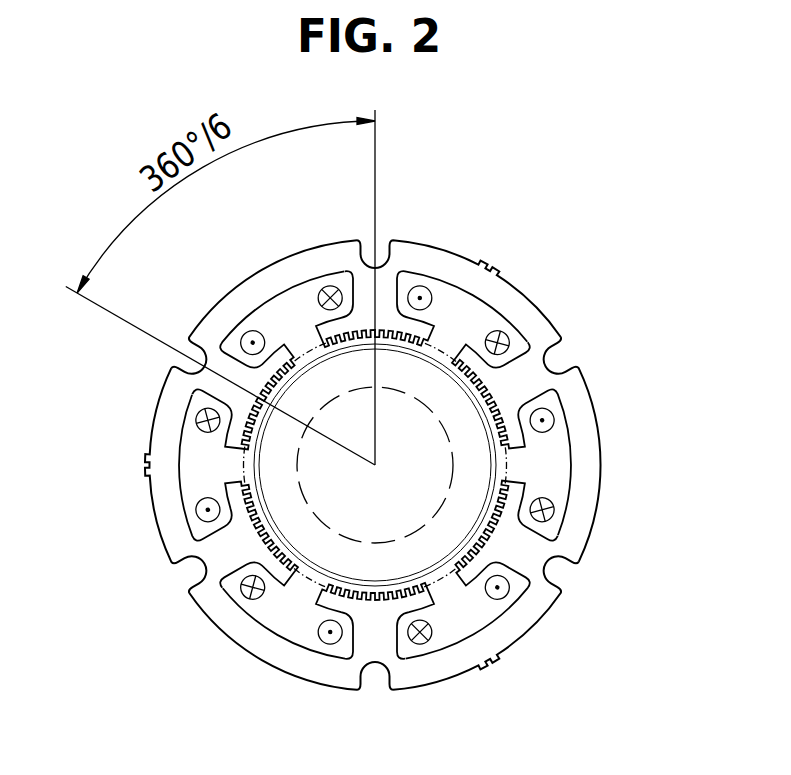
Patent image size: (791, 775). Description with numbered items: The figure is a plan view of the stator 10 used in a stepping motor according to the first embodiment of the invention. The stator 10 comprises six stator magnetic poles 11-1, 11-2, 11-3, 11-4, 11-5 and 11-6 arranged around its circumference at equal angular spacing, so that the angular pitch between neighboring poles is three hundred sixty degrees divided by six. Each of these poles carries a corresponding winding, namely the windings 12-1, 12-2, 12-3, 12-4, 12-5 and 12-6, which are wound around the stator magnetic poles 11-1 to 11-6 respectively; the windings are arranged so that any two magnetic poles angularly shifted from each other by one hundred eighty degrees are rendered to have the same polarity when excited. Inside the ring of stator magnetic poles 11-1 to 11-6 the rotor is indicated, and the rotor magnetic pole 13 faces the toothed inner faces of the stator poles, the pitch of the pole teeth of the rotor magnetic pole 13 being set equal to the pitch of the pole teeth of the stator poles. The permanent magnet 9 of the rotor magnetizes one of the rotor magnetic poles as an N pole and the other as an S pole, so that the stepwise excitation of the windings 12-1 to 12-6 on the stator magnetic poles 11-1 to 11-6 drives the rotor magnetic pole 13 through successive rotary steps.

The permanent magnet 9 is at (453, 461).
The stator 10 is at (312, 250).
The stator magnetic pole 11-1 is at (386, 292).
The stator magnetic pole 11-2 is at (508, 383).
The stator magnetic pole 11-3 is at (530, 553).
The stator magnetic pole 11-4 is at (381, 642).
The stator magnetic pole 11-5 is at (220, 556).
The stator magnetic pole 11-6 is at (210, 360).
The winding 12-1 is at (432, 301).
The winding 12-2 is at (554, 417).
The winding 12-3 is at (508, 594).
The winding 12-4 is at (326, 645).
The winding 12-5 is at (196, 512).
The winding 12-6 is at (242, 347).
The rotor magnetic pole 13 is at (242, 468).